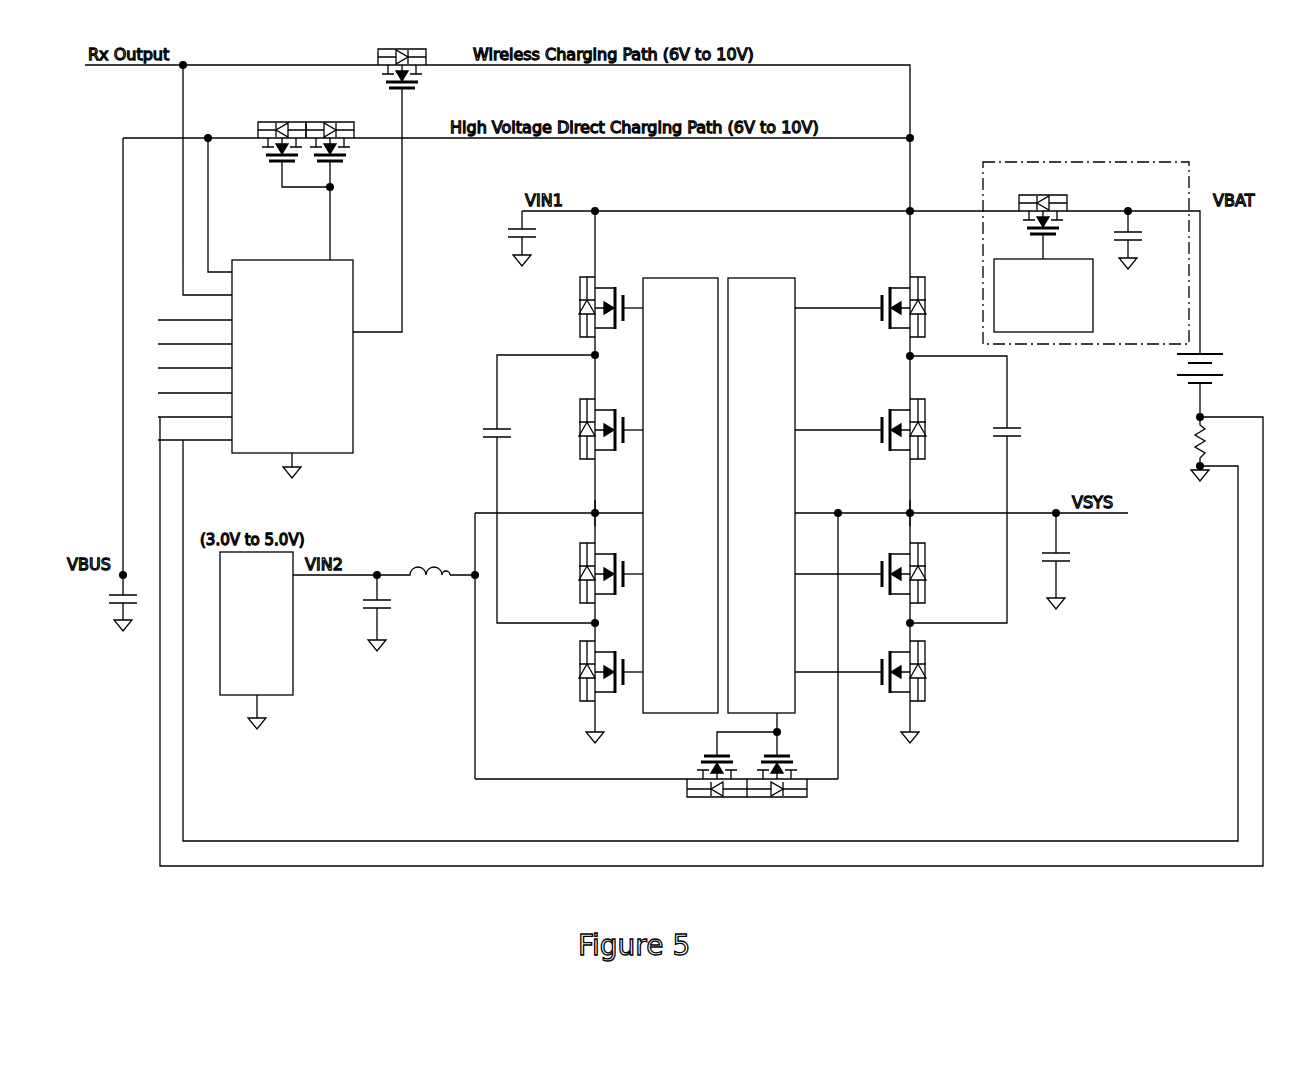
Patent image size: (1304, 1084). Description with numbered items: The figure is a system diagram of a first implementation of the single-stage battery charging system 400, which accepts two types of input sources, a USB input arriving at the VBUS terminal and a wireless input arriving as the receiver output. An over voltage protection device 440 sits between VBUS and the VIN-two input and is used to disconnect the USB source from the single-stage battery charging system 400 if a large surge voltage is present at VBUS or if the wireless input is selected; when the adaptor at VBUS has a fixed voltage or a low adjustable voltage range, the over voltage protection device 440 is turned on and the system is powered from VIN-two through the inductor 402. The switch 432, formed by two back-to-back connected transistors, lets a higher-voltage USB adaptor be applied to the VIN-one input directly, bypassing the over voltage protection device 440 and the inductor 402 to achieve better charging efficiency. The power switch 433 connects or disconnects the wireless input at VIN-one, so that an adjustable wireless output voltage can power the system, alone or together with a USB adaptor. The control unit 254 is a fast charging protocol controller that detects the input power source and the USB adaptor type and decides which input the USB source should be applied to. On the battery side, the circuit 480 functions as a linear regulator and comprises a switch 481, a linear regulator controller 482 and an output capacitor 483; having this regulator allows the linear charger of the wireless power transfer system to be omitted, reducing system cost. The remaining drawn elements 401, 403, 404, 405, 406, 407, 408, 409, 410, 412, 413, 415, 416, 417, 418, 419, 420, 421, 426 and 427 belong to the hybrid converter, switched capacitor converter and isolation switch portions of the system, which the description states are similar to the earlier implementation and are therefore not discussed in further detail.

The single-stage battery charging system 400 is at (85, 185).
The control unit 254 is at (253, 253).
The input capacitor 401 is at (385, 620).
The inductor 402 is at (422, 558).
The flying capacitor 403 is at (483, 418).
The VIN1 input capacitor 404 is at (513, 225).
The first switch 405 is at (568, 326).
The second switch 406 is at (570, 415).
The switching node 407 is at (590, 510).
The third switch 408 is at (570, 565).
The fourth switch 409 is at (568, 672).
The bypass switch pair 410 is at (693, 762).
The first controller 412 is at (675, 277).
The flying capacitor 413 is at (1013, 425).
The fifth switch 415 is at (940, 306).
The sixth switch 416 is at (944, 422).
The VSYS node 417 is at (915, 508).
The seventh switch 418 is at (938, 568).
The eighth switch 419 is at (937, 662).
The output capacitor 420 is at (1070, 572).
The second controller 421 is at (760, 277).
The dual cell battery 426 is at (1173, 370).
The sense resistor 427 is at (1185, 447).
The switch 432 is at (343, 168).
The power switch 433 is at (380, 72).
The over voltage protection device 440 is at (293, 668).
The circuit 480 is at (1040, 163).
The switch 481 is at (1068, 202).
The linear regulator controller 482 is at (1095, 282).
The output capacitor 483 is at (1147, 247).